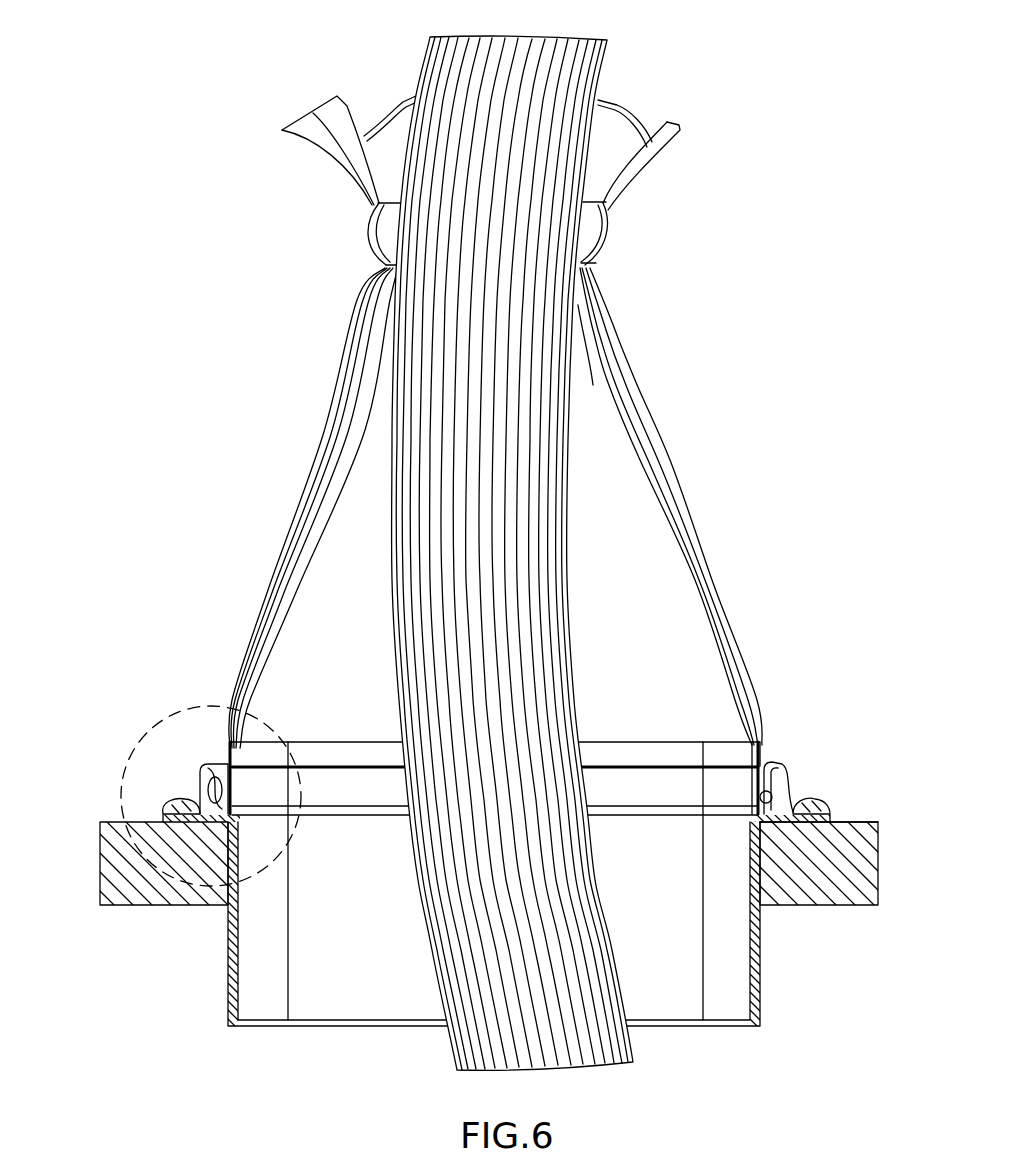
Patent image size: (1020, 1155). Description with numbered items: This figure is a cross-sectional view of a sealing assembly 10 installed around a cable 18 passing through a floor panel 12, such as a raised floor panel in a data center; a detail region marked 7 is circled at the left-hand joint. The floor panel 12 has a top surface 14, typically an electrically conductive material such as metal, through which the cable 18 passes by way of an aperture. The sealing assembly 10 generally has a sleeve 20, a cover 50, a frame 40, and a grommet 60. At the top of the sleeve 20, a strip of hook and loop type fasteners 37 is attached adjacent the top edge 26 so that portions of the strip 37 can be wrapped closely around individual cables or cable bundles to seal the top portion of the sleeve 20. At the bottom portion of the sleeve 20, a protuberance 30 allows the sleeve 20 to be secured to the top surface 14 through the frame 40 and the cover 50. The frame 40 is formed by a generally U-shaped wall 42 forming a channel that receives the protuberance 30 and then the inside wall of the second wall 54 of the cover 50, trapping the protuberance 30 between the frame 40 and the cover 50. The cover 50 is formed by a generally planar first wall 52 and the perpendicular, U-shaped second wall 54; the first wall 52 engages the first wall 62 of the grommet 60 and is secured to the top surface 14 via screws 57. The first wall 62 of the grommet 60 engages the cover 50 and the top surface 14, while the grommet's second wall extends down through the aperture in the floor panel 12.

The detail circle (FIG. 7) 7 is at (204, 706).
The sealing assembly 10 is at (280, 276).
The floor panel 12 is at (831, 908).
The top surface 14 is at (861, 814).
The cable 18 is at (570, 1058).
The sleeve 20 is at (322, 427).
The top edge 26 is at (628, 104).
The protuberance 30 is at (224, 782).
The hook and loop type fasteners strip 37 is at (399, 106).
The frame 40 is at (750, 786).
The wall 42 is at (758, 808).
The cover 50 is at (789, 756).
The first wall 52 is at (123, 818).
The second wall 54 is at (199, 777).
The screws 57 is at (180, 803).
The grommet 60 is at (689, 1026).
The first wall 62 is at (828, 810).